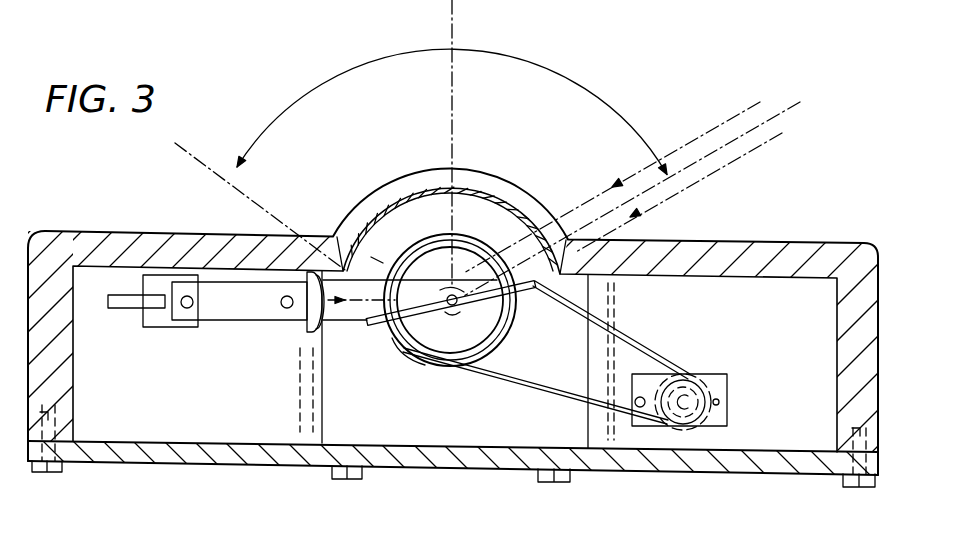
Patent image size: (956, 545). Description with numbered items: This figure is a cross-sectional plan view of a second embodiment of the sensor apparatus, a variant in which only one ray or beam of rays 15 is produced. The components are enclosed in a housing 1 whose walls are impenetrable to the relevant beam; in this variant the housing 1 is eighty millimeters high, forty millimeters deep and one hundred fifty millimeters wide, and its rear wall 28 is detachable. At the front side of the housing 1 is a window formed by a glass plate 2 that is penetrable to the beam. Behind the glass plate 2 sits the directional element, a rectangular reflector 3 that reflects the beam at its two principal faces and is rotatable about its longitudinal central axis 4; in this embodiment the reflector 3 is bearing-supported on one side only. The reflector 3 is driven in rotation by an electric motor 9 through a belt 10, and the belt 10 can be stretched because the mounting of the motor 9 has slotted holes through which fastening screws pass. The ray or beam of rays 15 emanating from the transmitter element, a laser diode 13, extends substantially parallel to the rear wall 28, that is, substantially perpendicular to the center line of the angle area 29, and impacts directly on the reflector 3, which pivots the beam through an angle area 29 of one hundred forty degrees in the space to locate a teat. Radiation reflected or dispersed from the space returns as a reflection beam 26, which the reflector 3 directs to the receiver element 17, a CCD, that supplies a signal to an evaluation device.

The housing 1 is at (146, 232).
The glass plate 2 is at (489, 191).
The reflector 3 is at (490, 305).
The longitudinal central axis 4 is at (456, 308).
The electric motor 9 is at (760, 330).
The belt 10 is at (500, 386).
The laser diode 13 is at (262, 312).
The ray or beam of rays 15 is at (334, 325).
The receiver element 17 is at (178, 332).
The reflection beam 26 is at (312, 366).
The rear wall 28 is at (208, 453).
The angle area 29 is at (553, 72).